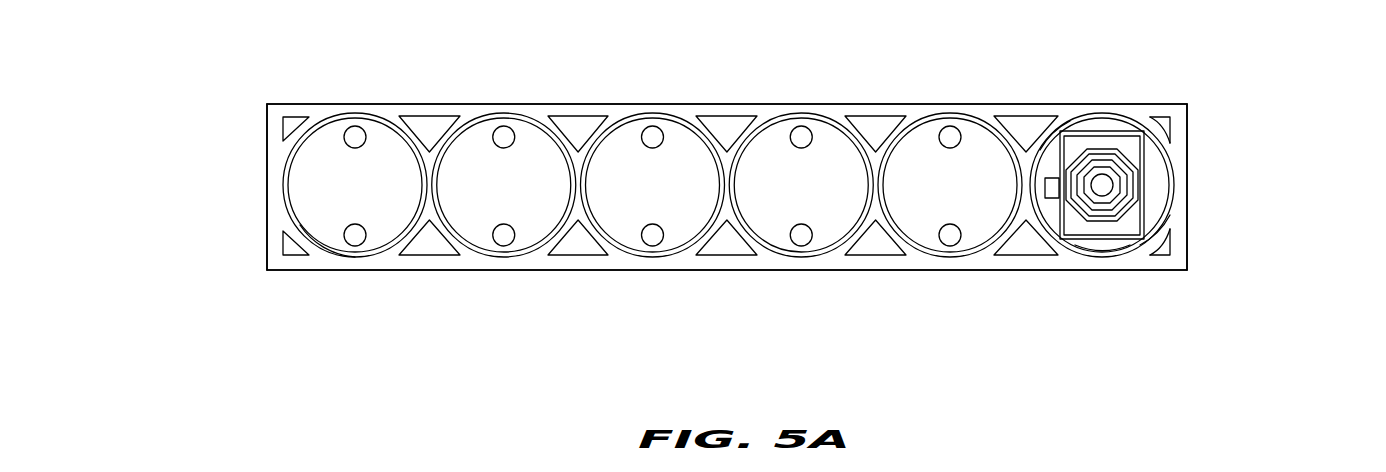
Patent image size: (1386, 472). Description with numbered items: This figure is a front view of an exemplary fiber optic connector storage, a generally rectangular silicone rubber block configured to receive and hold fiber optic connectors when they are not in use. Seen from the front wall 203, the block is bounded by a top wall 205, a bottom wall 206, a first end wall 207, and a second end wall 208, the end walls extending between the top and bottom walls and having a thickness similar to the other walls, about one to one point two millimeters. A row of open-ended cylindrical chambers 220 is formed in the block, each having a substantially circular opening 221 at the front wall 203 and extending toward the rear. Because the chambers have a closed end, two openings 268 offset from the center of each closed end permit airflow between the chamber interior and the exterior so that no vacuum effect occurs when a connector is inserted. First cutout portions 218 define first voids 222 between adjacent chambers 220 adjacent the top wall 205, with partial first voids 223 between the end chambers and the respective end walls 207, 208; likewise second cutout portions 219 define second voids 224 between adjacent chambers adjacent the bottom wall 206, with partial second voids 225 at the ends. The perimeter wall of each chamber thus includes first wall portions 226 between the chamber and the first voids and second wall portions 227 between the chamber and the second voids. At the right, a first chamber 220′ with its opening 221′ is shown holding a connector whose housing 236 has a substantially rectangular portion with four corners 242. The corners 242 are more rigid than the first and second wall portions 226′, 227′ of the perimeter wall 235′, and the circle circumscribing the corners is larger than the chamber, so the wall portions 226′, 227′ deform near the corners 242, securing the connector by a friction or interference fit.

The front wall 203 is at (484, 104).
The top wall 205 is at (622, 104).
The bottom wall 206 is at (977, 271).
The first end wall 207 is at (267, 163).
The second end wall 208 is at (1188, 152).
The first cutout portions 218 is at (1008, 128).
The second cutout portions 219 is at (435, 258).
The chambers 220 is at (334, 160).
The first chamber 220′ is at (1163, 207).
The opening 221 is at (332, 240).
The opening of first chamber 221′ is at (1100, 259).
The first voids 222 is at (433, 114).
The partial first voids 223 is at (290, 121).
The second voids 224 is at (583, 255).
The partial second voids 225 is at (290, 245).
The first wall portions 226 is at (566, 116).
The first wall portions of first chamber 226′ is at (1054, 120).
The second wall portions 227 is at (556, 254).
The second wall portions of first chamber 227′ is at (1162, 234).
The perimeter wall of first chamber 235′ is at (1030, 170).
The connector housing 236 is at (1145, 168).
The corners 242 is at (1145, 132).
The openings 268 is at (357, 126).